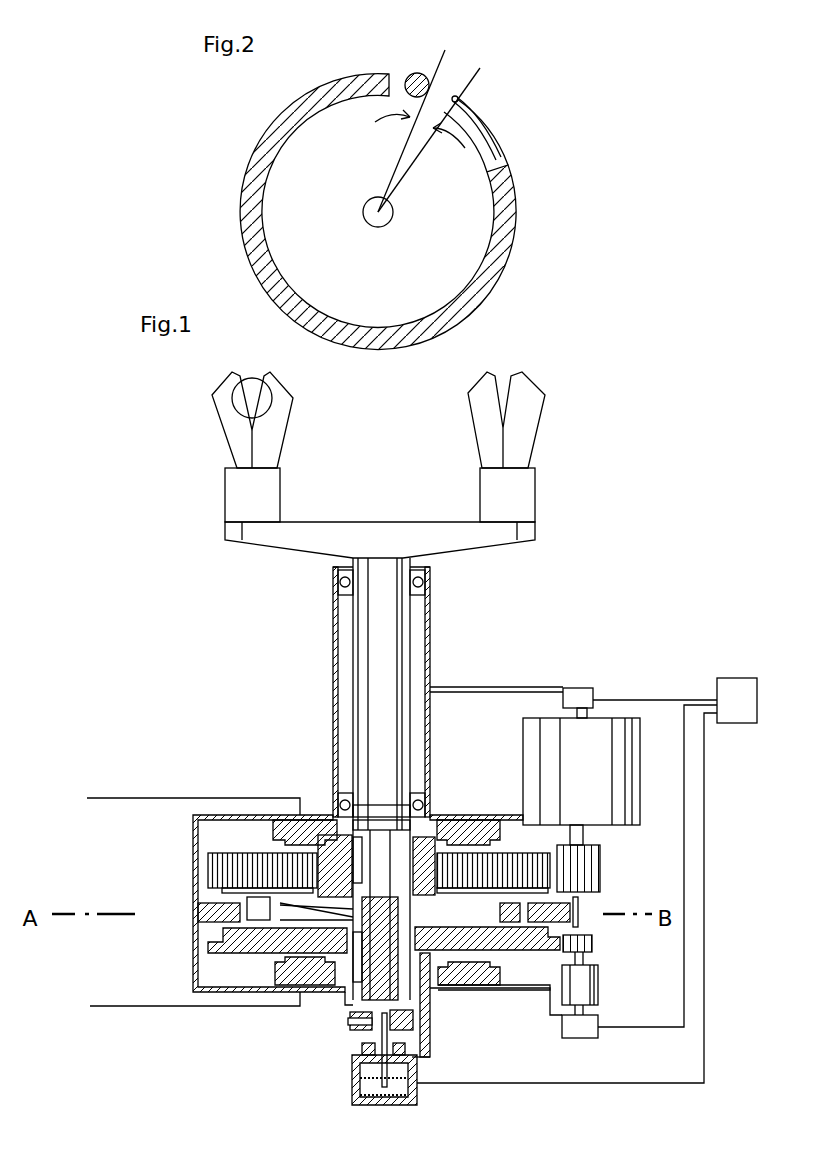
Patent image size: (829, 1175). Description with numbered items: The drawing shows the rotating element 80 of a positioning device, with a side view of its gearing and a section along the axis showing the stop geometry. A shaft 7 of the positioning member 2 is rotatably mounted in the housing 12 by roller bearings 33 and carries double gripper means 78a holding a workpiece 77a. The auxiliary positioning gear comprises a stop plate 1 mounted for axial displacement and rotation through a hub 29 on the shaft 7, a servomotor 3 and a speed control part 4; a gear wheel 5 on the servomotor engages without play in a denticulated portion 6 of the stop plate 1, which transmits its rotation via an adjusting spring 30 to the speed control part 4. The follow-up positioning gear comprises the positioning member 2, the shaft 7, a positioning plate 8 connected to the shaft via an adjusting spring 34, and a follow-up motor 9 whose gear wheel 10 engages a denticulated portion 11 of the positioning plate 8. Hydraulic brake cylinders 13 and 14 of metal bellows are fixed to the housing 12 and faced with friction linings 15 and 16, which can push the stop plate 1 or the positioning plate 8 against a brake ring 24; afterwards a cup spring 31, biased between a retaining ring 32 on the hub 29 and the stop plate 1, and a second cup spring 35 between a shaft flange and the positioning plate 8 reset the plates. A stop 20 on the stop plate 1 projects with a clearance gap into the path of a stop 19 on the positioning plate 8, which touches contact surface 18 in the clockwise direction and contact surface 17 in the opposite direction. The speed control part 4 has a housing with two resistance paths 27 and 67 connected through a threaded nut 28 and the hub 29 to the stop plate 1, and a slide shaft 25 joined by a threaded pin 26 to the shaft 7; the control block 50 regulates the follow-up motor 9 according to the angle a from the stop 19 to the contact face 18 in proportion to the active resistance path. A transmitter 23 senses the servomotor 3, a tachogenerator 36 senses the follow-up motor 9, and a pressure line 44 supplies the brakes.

In FIG. 1, the stop plate 1 is at (196, 966).
In FIG. 1, the positioning member 2 is at (258, 540).
In FIG. 1, the servomotor 3 is at (598, 982).
In FIG. 1, the speed control part 4 is at (362, 1106).
In FIG. 1, the gear wheel 5 is at (592, 944).
In FIG. 1, the denticulated portion 6 is at (210, 946).
In FIG. 1, the shaft 7 is at (398, 643).
In FIG. 1, the positioning plate 8 is at (515, 853).
In FIG. 1, the follow-up motor 9 is at (625, 762).
In FIG. 1, the gear wheel 10 is at (600, 867).
In FIG. 1, the denticulated portion 11 is at (218, 855).
In FIG. 1, the housing 12 is at (430, 602).
In FIG. 1, the brake cylinder 13 is at (445, 990).
In FIG. 1, the brake cylinder 14 is at (483, 816).
In FIG. 1, the friction lining 15 is at (477, 963).
In FIG. 1, the friction lining 16 is at (290, 818).
In FIG. 2, the contact surface 17 is at (390, 80).
In FIG. 2, the contact surface 18 is at (468, 96).
In FIG. 1, the contact surface 18 is at (232, 931).
In FIG. 2, the stop 19 is at (414, 138).
In FIG. 1, the stop 19 is at (242, 883).
In FIG. 2, the stop 20 is at (500, 170).
In FIG. 1, the stop 20 is at (490, 945).
In FIG. 1, the transmitter 23 is at (598, 1022).
In FIG. 1, the brake ring 24 is at (247, 910).
In FIG. 1, the slide shaft 25 is at (393, 1106).
In FIG. 1, the threaded pin 26 is at (348, 1022).
In FIG. 1, the resistance path 27 is at (410, 1078).
In FIG. 1, the threaded nut 28 is at (362, 1050).
In FIG. 1, the hub 29 is at (430, 1045).
In FIG. 1, the adjusting spring 30 is at (347, 995).
In FIG. 1, the cup spring 31 is at (275, 970).
In FIG. 1, the retaining ring 32 is at (200, 907).
In FIG. 1, the roller bearings 33 is at (338, 586).
In FIG. 1, the adjusting spring 34 is at (350, 830).
In FIG. 1, the cup spring 35 is at (350, 855).
In FIG. 1, the tachogenerator 36 is at (580, 696).
In FIG. 1, the pressure line 44 is at (117, 796).
In FIG. 1, the control block 50 is at (587, 880).
In FIG. 1, the resistance path 67 is at (417, 1101).
In FIG. 1, the workpiece 77a is at (238, 392).
In FIG. 1, the double gripper means 78a is at (495, 445).
In FIG. 1, the rotating element 80 is at (484, 702).
In FIG. 2, the angle a is at (426, 124).